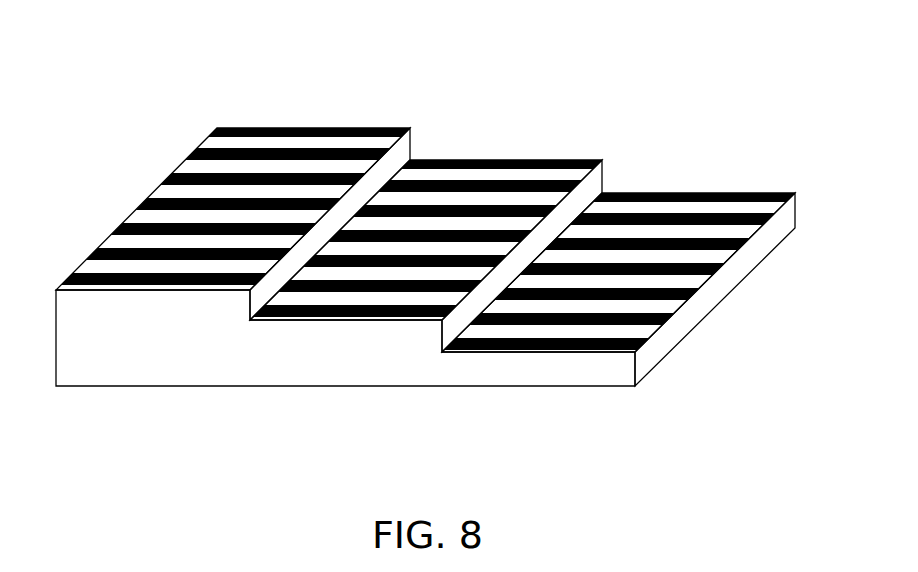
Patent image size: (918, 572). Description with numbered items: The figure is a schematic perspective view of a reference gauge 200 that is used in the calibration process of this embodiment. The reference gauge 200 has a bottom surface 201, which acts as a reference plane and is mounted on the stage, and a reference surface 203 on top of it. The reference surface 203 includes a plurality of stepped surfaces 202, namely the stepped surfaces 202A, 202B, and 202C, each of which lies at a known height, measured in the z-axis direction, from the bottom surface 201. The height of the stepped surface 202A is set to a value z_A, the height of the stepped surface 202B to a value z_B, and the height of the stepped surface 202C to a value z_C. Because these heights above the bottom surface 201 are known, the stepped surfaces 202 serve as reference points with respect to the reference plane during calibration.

The reference gauge 200 is at (430, 232).
The bottom surface 201 is at (320, 386).
The stepped surfaces 202 is at (430, 186).
The stepped surface 202A is at (251, 170).
The stepped surface 202B is at (493, 173).
The stepped surface 202C is at (716, 194).
The reference surface 203 is at (305, 123).